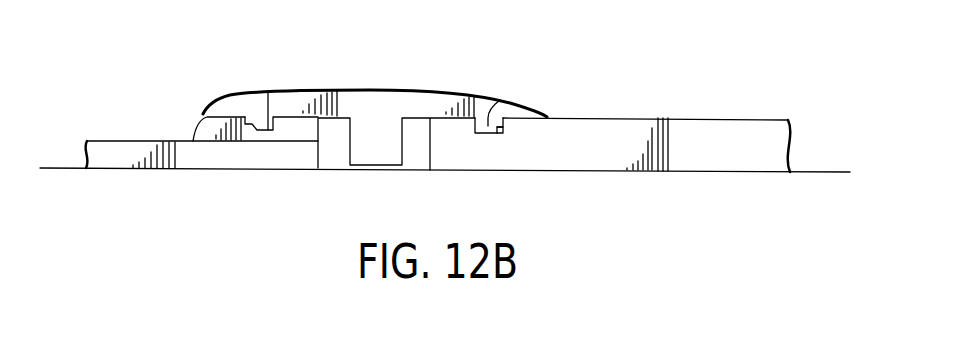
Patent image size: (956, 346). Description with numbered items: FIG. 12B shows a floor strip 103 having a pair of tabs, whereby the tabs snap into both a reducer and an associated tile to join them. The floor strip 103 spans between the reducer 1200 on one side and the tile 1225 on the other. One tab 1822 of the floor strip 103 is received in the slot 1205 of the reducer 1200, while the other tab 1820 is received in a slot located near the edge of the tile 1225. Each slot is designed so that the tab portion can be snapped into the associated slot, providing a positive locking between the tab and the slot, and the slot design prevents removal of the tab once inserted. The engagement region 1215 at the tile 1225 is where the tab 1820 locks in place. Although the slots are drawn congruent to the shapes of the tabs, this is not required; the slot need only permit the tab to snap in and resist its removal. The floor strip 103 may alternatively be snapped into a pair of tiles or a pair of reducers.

The floor strip 103 is at (382, 86).
The reducer 1200 is at (198, 132).
The slot 1205 is at (264, 131).
The tile 1225 is at (674, 131).
The first hook 1822 is at (264, 130).
The tab 1820 is at (487, 124).
The catch 1215 is at (502, 131).